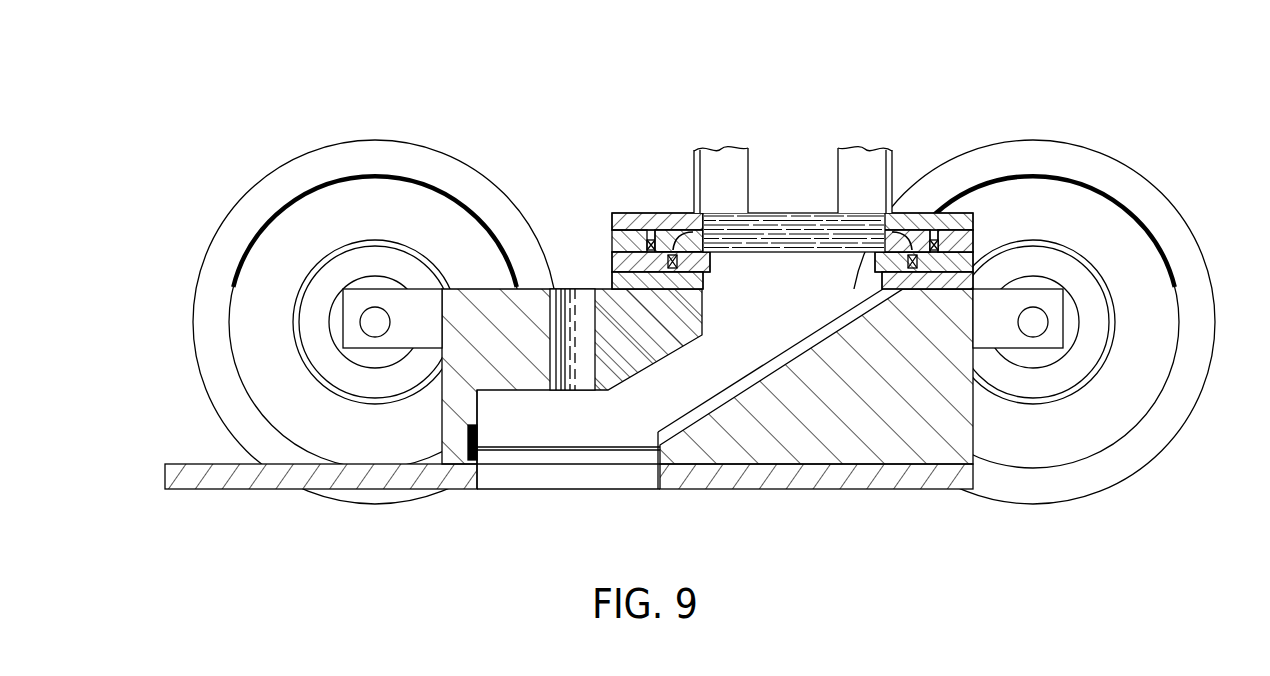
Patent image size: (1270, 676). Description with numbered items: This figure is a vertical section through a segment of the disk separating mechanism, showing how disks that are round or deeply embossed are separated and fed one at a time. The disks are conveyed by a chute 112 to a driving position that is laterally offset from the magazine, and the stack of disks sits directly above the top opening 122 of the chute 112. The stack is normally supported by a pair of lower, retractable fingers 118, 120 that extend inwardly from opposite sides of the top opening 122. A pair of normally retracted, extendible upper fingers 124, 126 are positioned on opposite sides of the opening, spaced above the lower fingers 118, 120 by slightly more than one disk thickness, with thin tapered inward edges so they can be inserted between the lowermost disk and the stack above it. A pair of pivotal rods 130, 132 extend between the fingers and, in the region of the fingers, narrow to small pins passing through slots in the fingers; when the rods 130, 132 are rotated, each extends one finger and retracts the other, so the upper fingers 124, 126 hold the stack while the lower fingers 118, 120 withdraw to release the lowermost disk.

The chute 112 is at (785, 375).
The lower retractable finger 118 is at (975, 258).
The lower retractable finger 120 is at (555, 288).
The top opening of the chute 122 is at (975, 290).
The upper extendible finger 124 is at (905, 250).
The upper extendible finger 126 is at (682, 230).
The pivotal rod 130 is at (917, 242).
The pivotal rod 132 is at (612, 255).